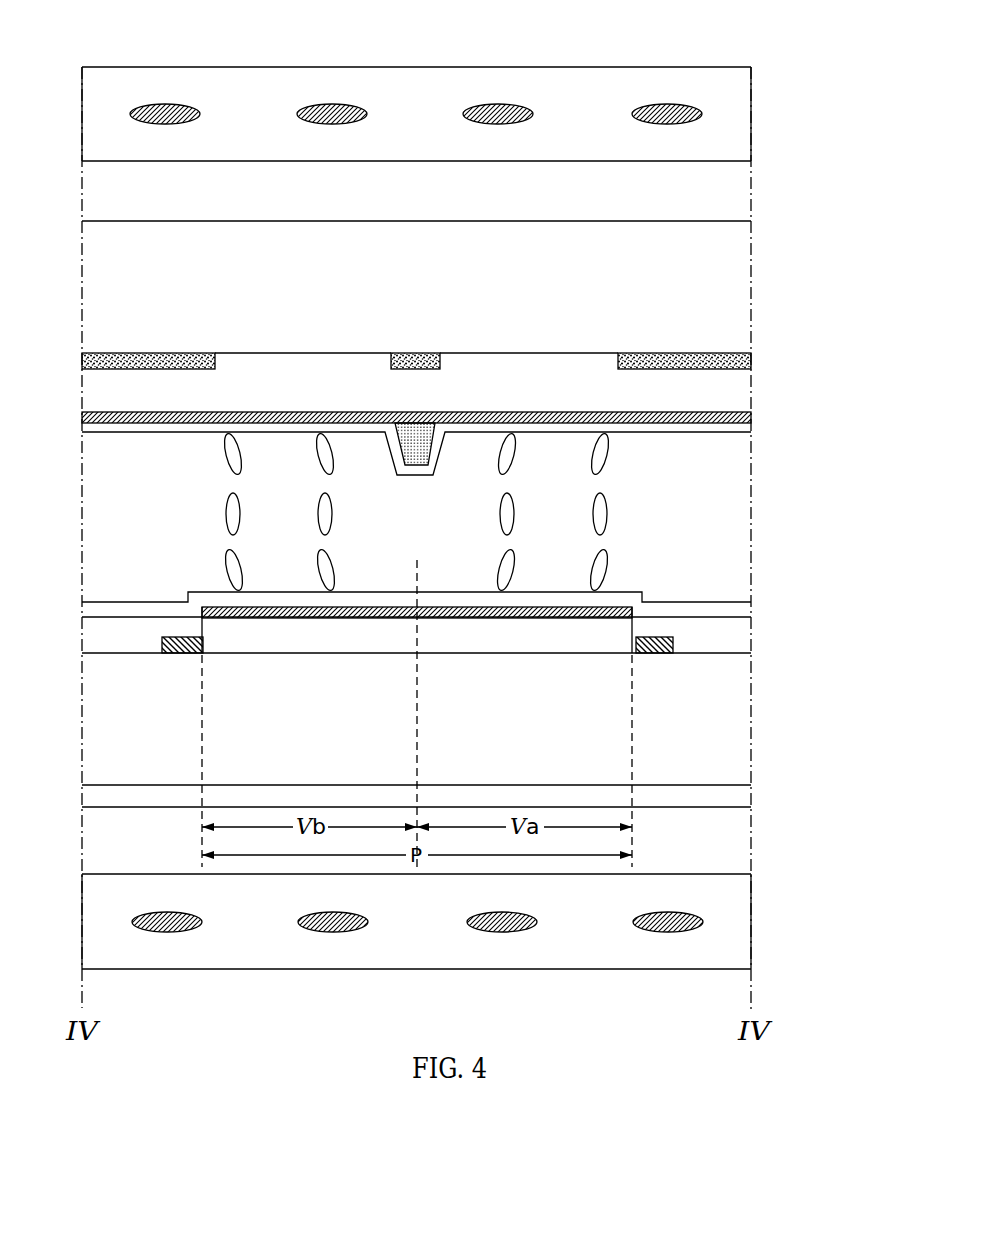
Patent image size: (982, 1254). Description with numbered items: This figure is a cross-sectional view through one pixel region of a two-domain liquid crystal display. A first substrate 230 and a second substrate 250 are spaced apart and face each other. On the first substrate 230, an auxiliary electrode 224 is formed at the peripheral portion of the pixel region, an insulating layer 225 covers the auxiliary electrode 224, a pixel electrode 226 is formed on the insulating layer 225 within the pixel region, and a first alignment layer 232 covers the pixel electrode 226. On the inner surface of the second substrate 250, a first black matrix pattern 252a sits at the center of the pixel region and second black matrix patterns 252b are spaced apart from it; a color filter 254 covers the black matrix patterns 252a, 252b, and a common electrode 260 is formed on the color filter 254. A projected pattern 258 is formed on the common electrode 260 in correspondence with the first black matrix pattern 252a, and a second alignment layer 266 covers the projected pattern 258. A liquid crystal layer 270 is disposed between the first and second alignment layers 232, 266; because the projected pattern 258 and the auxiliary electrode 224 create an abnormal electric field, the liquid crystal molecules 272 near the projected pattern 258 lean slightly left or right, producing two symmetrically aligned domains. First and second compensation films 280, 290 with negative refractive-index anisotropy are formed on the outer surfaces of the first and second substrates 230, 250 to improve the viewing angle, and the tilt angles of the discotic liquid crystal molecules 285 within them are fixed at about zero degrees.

The discotic liquid crystal molecules 285 is at (500, 113).
The second compensation film 290 is at (752, 67).
The first compensation film 280 is at (752, 874).
The second substrate 250 is at (137, 302).
The second black matrix patterns 252b is at (177, 360).
The first black matrix pattern 252a is at (418, 357).
The color filter 254 is at (533, 368).
The common electrode 260 is at (290, 412).
The projected pattern 258 is at (408, 422).
The second alignment layer 266 is at (363, 433).
The liquid crystal molecules 272 is at (508, 454).
The liquid crystal layer 270 is at (752, 432).
The first alignment layer 232 is at (120, 607).
The pixel electrode 226 is at (513, 620).
The insulating layer 225 is at (328, 650).
The auxiliary electrode 224 is at (175, 654).
The first substrate 230 is at (138, 734).